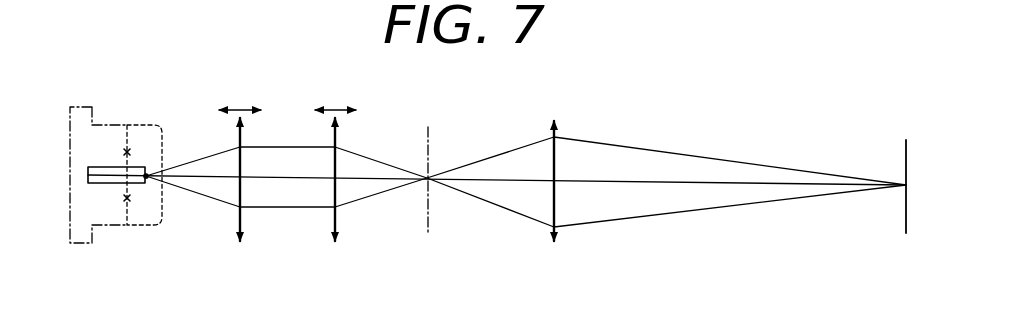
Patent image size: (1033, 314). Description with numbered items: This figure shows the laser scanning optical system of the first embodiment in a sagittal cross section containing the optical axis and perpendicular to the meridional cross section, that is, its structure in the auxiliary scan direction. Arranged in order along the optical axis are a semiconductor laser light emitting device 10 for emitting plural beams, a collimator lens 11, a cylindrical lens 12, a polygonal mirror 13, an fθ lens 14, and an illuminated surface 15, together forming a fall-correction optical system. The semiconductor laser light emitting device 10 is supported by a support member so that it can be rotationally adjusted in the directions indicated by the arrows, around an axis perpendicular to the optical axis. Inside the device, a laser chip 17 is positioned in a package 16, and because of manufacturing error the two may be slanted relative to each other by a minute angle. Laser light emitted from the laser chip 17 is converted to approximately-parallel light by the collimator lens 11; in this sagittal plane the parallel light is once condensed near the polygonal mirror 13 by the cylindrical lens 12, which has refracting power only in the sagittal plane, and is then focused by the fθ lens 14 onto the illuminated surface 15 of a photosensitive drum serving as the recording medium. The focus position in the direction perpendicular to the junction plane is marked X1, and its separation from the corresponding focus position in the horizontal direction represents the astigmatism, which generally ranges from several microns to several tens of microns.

The semiconductor laser light emitting device 10 is at (110, 125).
The collimator lens 11 is at (243, 167).
The cylindrical lens 12 is at (338, 167).
The polygonal mirror 13 is at (430, 156).
The fθ lens 14 is at (557, 152).
The illuminated surface 15 is at (905, 141).
The package 16 is at (158, 125).
The laser chip 17 is at (98, 184).
The focus position perpendicular to the junction plane X1 is at (147, 177).